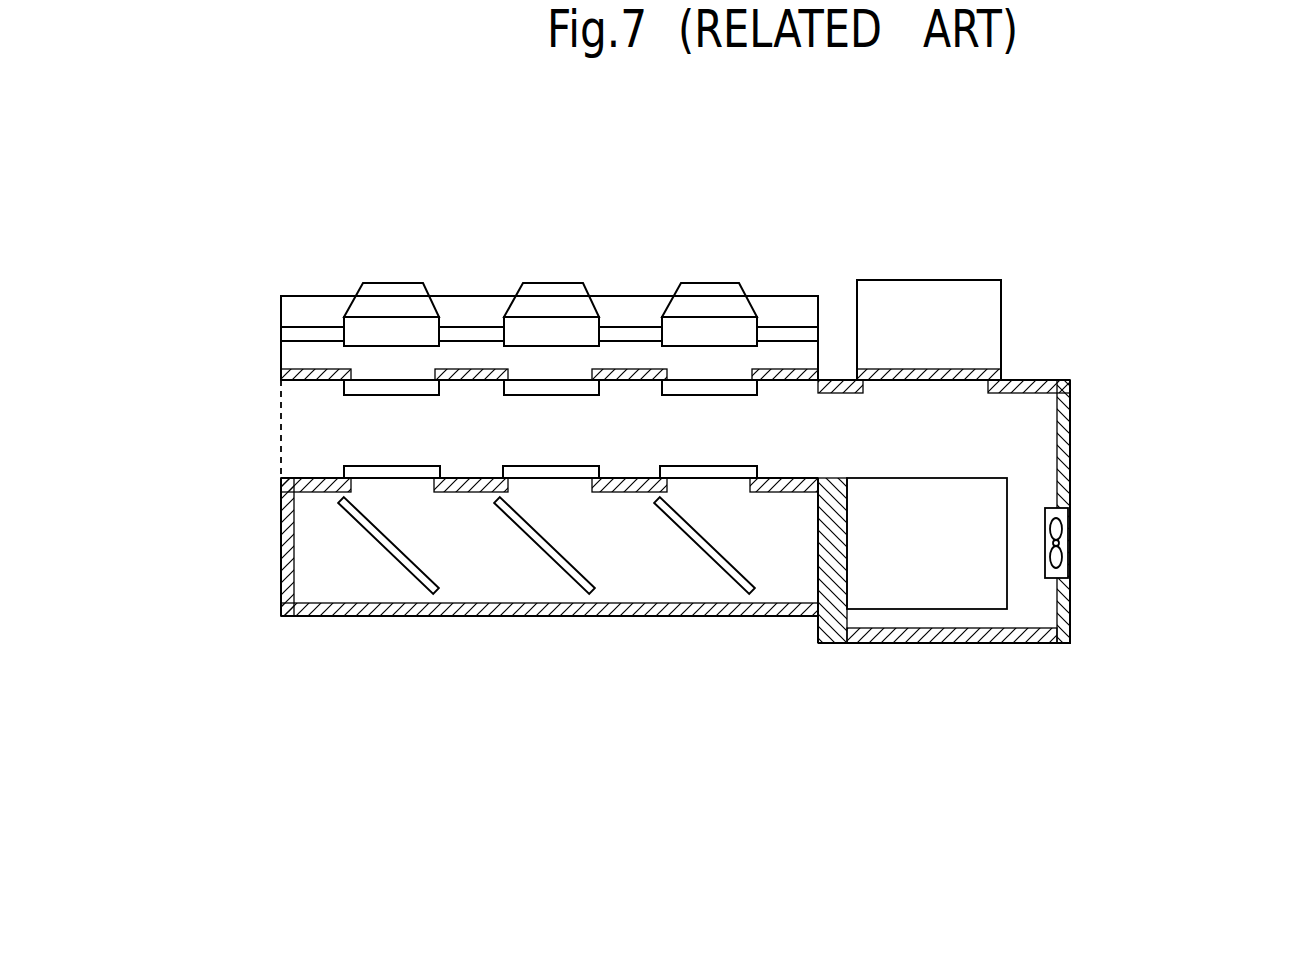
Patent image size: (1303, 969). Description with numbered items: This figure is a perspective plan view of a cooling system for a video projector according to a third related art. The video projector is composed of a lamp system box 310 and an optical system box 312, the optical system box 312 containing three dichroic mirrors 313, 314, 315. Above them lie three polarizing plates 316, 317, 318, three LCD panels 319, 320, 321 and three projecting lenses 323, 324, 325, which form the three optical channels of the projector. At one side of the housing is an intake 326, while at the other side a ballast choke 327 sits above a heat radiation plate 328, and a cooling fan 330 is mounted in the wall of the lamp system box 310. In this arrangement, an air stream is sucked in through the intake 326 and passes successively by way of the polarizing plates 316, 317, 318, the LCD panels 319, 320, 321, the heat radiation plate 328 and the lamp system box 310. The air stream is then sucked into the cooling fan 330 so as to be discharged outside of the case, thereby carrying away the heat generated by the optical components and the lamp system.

The lamp system box 310 is at (983, 593).
The optical system box 312 is at (556, 617).
The dichroic mirror 313 is at (718, 560).
The dichroic mirror 314 is at (560, 560).
The dichroic mirror 315 is at (402, 560).
The polarizing plate 316 is at (710, 465).
The polarizing plate 317 is at (512, 463).
The polarizing plate 318 is at (344, 466).
The LCD panel 319 is at (763, 395).
The LCD panel 320 is at (537, 395).
The LCD panel 321 is at (350, 390).
The projecting lens 323 is at (710, 283).
The projecting lens 324 is at (545, 283).
The projecting lens 325 is at (387, 283).
The intake 326 is at (278, 433).
The ballast choke 327 is at (967, 292).
The heat radiation plate 328 is at (1003, 372).
The cooling fan 330 is at (1063, 528).